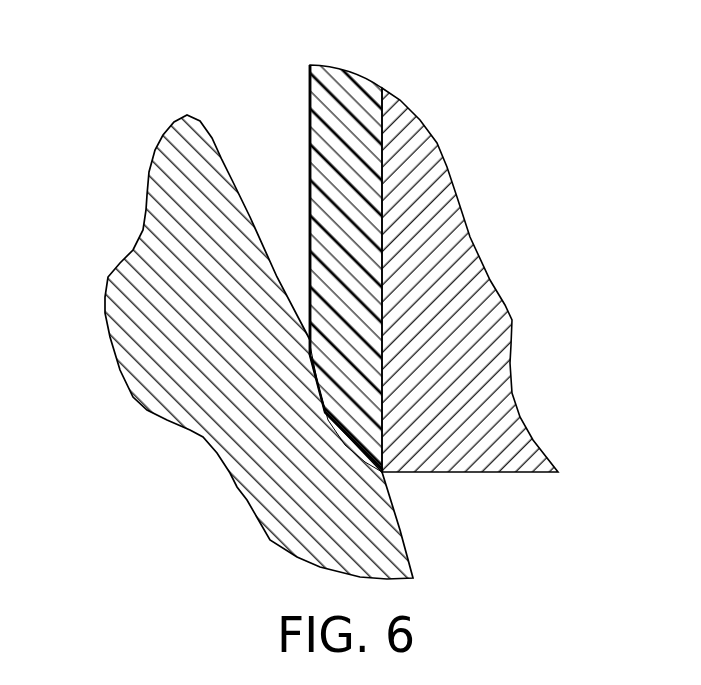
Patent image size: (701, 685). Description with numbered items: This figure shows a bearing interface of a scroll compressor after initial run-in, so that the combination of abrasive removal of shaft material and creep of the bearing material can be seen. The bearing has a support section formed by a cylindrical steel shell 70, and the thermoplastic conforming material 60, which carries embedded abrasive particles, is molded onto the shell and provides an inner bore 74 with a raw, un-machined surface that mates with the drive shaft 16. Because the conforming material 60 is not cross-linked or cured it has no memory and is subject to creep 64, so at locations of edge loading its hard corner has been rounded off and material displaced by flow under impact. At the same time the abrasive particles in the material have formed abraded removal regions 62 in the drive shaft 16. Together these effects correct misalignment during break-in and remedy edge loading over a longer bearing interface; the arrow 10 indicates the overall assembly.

The assembly 10 is at (339, 296).
The drive shaft 16 is at (143, 338).
The thermoplastic conforming material 60 is at (367, 87).
The abraded removal regions 62 is at (310, 380).
The creep 64 is at (390, 473).
The cylindrical steel shell 70 is at (493, 348).
The inner bore 74 is at (308, 105).